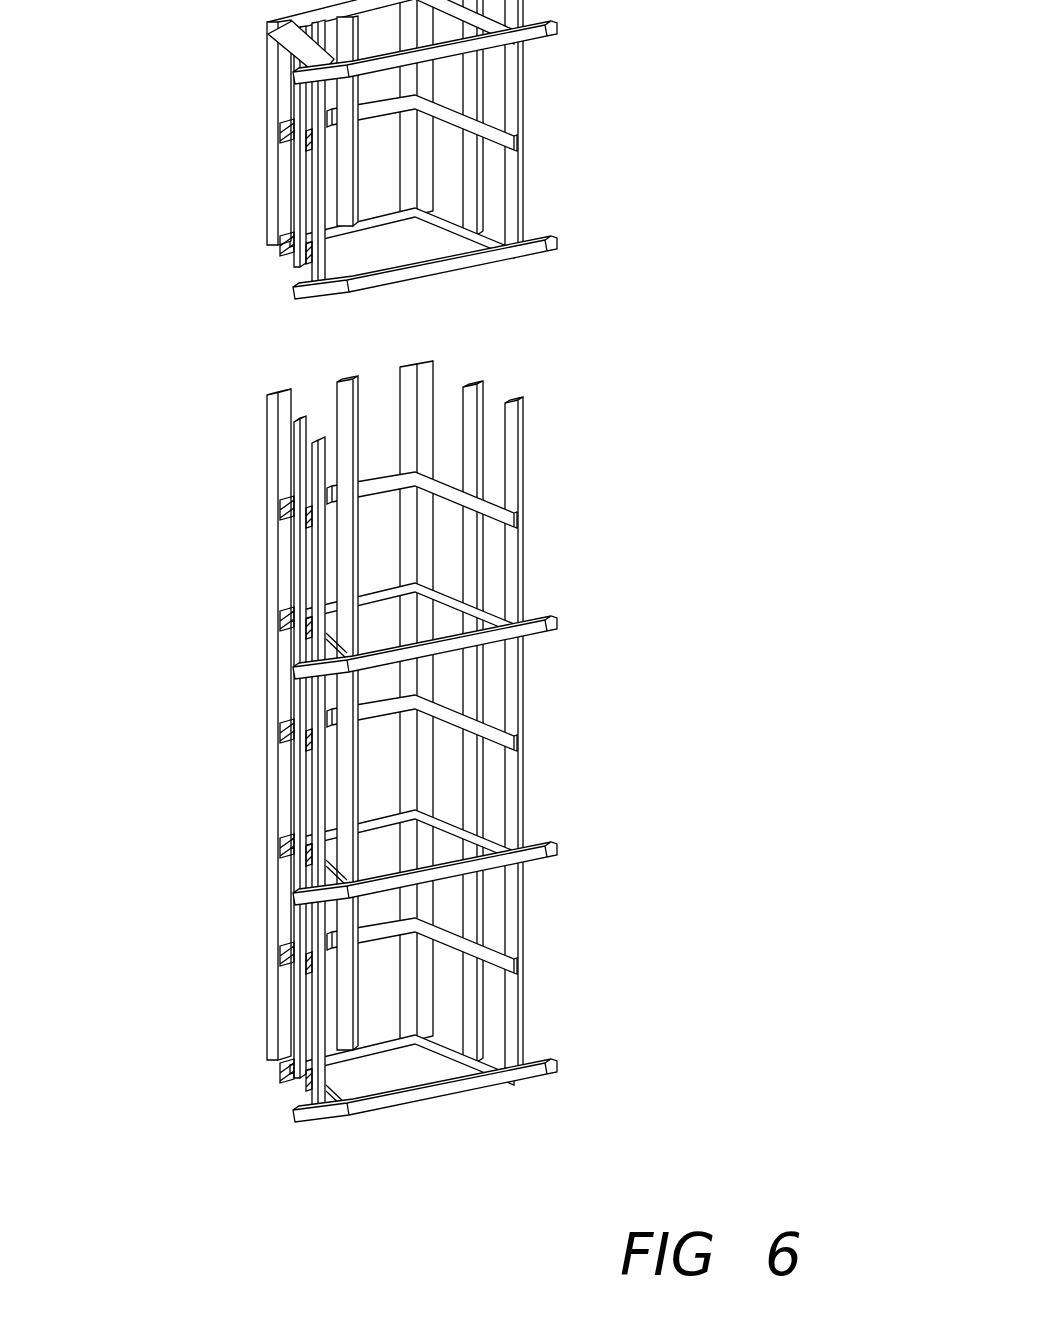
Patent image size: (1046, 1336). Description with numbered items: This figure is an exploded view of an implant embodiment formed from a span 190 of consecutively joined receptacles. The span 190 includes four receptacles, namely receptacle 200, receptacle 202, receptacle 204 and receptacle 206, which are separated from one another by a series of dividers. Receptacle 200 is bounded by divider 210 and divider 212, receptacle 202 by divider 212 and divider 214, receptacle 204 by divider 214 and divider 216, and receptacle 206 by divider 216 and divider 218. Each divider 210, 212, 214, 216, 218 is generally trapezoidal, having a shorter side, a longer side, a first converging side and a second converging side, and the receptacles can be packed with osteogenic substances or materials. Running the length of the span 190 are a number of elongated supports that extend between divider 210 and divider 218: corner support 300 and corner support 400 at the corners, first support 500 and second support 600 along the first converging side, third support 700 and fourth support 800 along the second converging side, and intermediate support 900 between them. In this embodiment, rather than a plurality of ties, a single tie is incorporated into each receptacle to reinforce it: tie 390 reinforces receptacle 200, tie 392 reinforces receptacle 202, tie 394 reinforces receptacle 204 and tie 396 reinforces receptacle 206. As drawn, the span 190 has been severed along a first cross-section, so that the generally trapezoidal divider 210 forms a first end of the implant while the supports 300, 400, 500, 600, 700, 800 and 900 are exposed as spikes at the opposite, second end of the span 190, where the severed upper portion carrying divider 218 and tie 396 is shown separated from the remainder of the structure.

The span 190 is at (478, 700).
The receptacle 200 is at (517, 1037).
The receptacle 202 is at (516, 811).
The receptacle 204 is at (510, 548).
The receptacle 206 is at (419, 149).
The divider 210 is at (428, 1102).
The divider 212 is at (455, 877).
The divider 214 is at (485, 645).
The divider 216 is at (470, 274).
The divider 218 is at (455, 60).
The corner support 300 is at (264, 394).
The tie 390 is at (365, 937).
The tie 392 is at (373, 715).
The tie 394 is at (375, 488).
The tie 396 is at (373, 112).
The corner support 400 is at (438, 369).
The first support 500 is at (318, 445).
The second support 600 is at (288, 421).
The third support 700 is at (528, 410).
The fourth support 800 is at (484, 388).
The intermediate support 900 is at (337, 379).